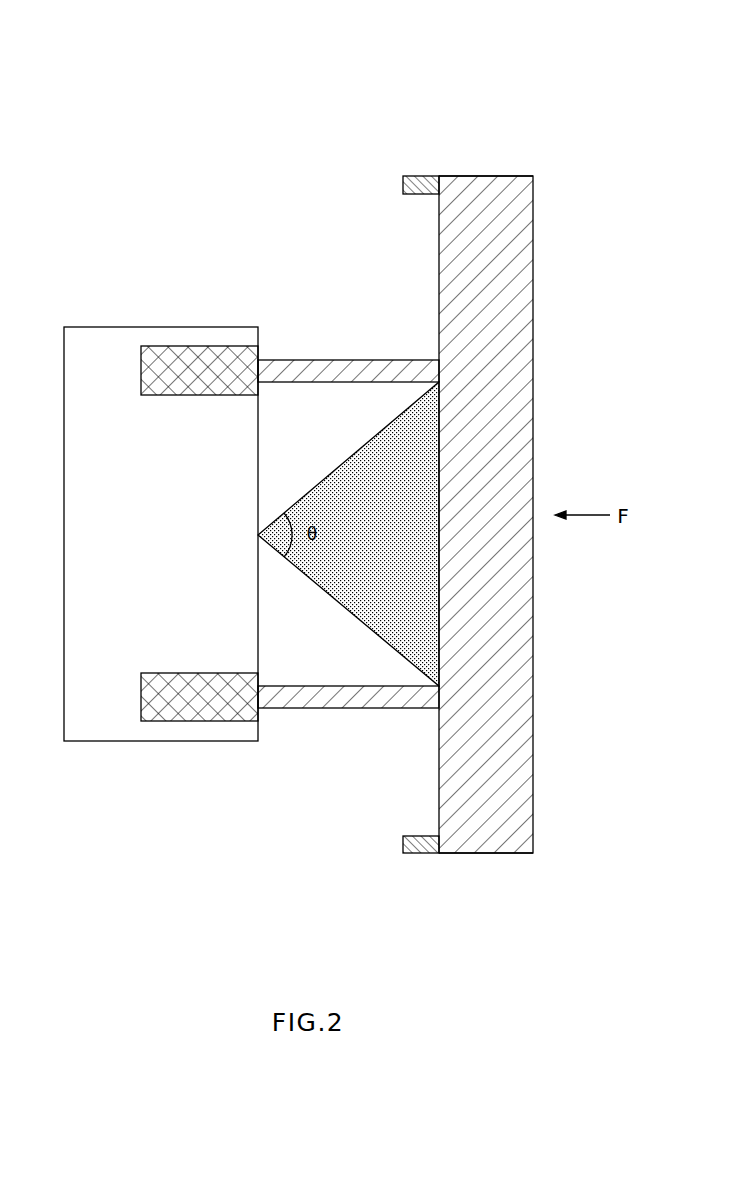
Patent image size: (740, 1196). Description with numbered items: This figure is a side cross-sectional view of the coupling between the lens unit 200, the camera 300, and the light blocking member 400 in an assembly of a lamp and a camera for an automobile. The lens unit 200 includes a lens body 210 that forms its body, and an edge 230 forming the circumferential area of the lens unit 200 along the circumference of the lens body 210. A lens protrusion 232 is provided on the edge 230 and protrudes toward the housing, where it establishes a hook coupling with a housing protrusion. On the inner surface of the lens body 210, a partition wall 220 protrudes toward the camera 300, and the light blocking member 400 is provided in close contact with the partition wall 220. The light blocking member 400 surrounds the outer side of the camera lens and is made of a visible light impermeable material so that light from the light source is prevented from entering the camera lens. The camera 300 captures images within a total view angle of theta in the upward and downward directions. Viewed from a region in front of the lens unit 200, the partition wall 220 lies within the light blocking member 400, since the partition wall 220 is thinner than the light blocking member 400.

The lens unit 200 is at (456, 97).
The lens body 210 is at (533, 348).
The partition wall 220 is at (348, 372).
The edge 230 is at (489, 185).
The lens protrusion 232 is at (421, 186).
The camera 300 is at (103, 340).
The light blocking member 400 is at (192, 360).